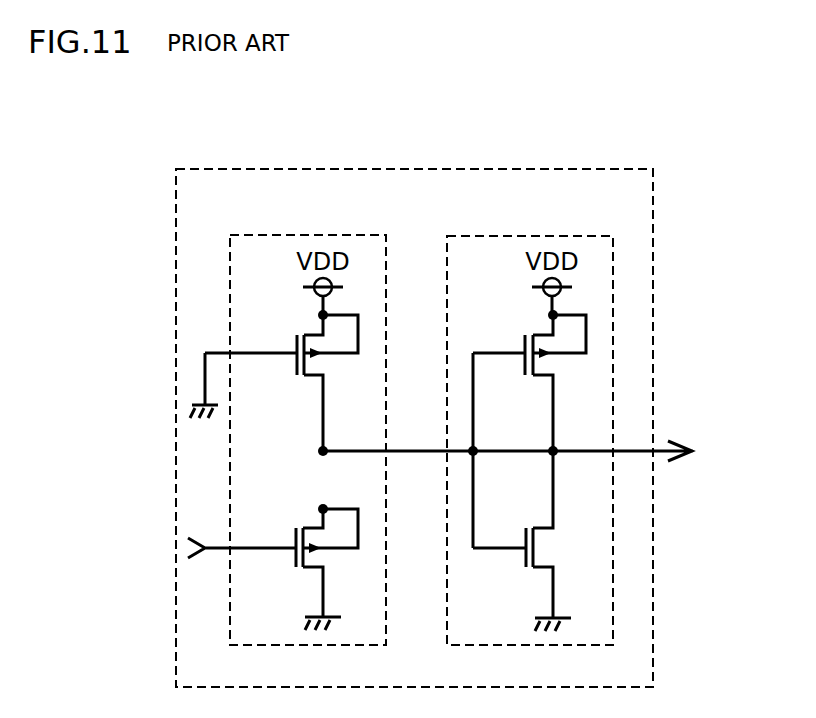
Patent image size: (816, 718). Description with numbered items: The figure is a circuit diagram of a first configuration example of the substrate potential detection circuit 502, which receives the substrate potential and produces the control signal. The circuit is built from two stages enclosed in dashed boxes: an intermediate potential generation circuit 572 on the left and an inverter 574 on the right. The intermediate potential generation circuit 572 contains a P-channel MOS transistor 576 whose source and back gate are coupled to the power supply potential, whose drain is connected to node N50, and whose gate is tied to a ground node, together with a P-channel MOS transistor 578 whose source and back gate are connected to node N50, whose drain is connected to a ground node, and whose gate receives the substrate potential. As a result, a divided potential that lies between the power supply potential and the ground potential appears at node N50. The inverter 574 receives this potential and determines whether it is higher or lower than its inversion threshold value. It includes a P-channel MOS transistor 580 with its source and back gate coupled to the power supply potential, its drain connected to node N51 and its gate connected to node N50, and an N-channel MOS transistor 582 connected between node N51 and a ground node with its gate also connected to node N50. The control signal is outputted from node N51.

The substrate potential detection circuit 502 is at (569, 167).
The intermediate potential generation circuit 572 is at (341, 233).
The inverter 574 is at (569, 234).
The P-channel MOS transistor 576 is at (300, 378).
The P-channel MOS transistor 578 is at (300, 522).
The P-channel MOS transistor 580 is at (527, 378).
The N-channel MOS transistor 582 is at (530, 522).
The node N50 is at (326, 448).
The node N51 is at (556, 448).